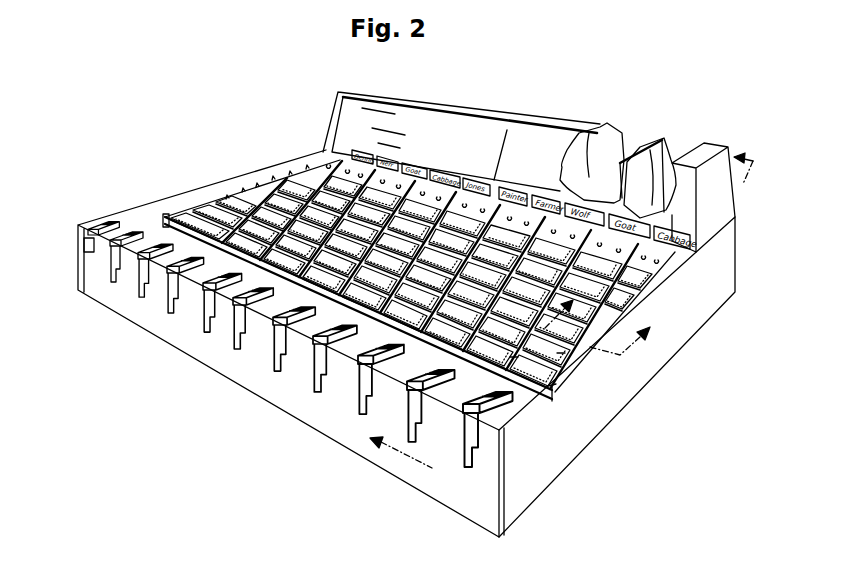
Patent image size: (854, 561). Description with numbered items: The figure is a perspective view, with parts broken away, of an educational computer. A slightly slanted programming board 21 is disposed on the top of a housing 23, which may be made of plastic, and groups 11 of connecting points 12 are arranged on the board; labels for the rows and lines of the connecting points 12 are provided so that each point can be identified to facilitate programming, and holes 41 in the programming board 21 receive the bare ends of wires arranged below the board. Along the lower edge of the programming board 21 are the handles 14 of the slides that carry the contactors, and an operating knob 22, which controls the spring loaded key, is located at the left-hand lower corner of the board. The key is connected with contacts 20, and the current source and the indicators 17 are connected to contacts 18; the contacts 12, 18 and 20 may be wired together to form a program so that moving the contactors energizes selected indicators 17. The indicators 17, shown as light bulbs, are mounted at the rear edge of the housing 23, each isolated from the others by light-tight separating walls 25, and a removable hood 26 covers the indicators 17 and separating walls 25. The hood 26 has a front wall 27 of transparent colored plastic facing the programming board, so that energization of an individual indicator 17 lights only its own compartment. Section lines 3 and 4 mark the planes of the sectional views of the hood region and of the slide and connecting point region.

The section line 3- 3 is at (573, 319).
The section line 4- 4 is at (591, 337).
The groups 11 is at (200, 212).
The connecting points 12 is at (499, 365).
The handles 14 is at (143, 268).
The indicators 17 is at (622, 158).
The contacts 18 is at (320, 158).
The contacts 20 is at (297, 164).
The programming board 21 is at (172, 207).
The operating knob 22 is at (103, 220).
The housing 23 is at (682, 320).
The separating walls 25 is at (603, 138).
The removable hood 26 is at (484, 107).
The front wall 27 is at (358, 127).
The holes 41 is at (562, 373).